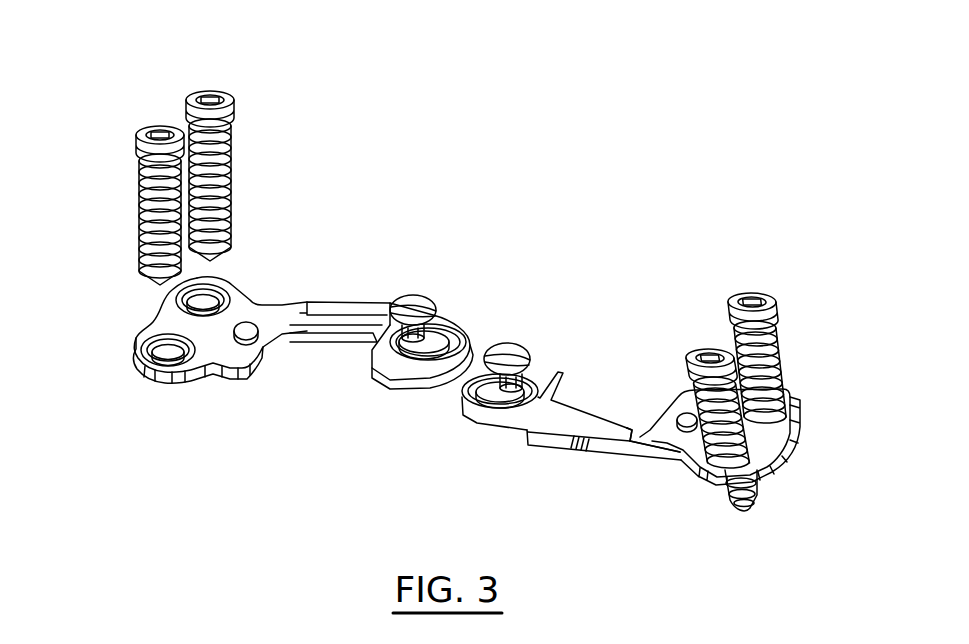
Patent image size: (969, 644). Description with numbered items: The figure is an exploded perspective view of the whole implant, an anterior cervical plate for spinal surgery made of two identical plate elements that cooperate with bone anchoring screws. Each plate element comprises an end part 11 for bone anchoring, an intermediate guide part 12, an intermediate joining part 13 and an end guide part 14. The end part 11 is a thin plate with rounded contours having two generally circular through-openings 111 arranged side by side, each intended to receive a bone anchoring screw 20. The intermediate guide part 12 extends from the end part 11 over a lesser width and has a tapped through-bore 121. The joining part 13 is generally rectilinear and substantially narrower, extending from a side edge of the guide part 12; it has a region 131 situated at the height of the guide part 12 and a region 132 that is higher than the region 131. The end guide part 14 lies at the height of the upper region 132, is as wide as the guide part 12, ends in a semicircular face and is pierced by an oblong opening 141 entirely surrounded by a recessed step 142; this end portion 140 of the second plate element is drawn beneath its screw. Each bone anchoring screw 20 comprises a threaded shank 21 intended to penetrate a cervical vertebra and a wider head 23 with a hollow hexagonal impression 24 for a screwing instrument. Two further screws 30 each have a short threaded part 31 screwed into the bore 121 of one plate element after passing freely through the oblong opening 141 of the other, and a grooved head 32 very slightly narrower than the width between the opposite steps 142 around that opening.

The end part 11 is at (173, 318).
The through-openings 111 is at (210, 290).
The tapped through-bore 121 is at (250, 325).
The intermediate guide part 12 is at (250, 355).
The intermediate joining part 13 is at (346, 328).
The region 131 is at (620, 452).
The region 132 is at (626, 428).
The end guide part 14 is at (396, 367).
The ring portion of second plate 140 is at (483, 412).
The oblong opening 141 is at (443, 335).
The recessed step 142 is at (458, 336).
The short threaded part 31 is at (421, 352).
The screw 30 is at (418, 297).
The head 32 is at (400, 301).
The bone anchoring screw 20 is at (176, 113).
The threaded shank 21 is at (784, 371).
The head 23 is at (235, 100).
The hollow hexagonal impression 24 is at (211, 100).